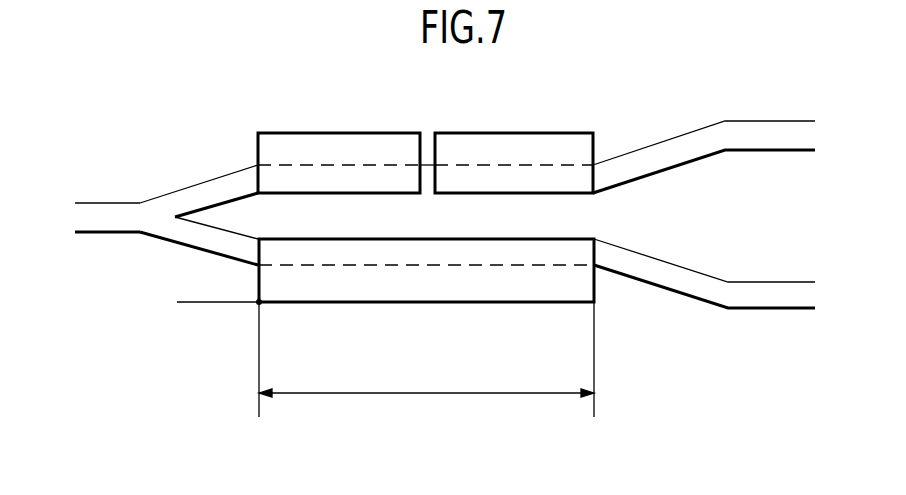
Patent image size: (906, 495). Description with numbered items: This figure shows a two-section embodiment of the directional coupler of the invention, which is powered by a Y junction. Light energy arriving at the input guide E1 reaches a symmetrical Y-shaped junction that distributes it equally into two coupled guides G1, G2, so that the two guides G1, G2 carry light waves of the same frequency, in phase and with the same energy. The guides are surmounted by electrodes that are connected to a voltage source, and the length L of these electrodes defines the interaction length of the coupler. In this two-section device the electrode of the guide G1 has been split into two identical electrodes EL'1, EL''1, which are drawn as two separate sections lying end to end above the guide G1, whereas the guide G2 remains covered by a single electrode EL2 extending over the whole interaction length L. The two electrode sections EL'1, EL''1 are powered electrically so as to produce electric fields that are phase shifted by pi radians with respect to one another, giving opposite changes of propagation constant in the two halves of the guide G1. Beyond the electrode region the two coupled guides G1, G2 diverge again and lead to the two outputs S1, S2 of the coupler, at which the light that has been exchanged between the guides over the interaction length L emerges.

The input guide E1 is at (98, 218).
The first coupled guide G1 is at (215, 188).
The second coupled guide G2 is at (200, 237).
The first electrode section of guide G1 EL'1 is at (346, 140).
The second electrode section of guide G1 EL''1 is at (514, 140).
The electrode of guide G2 EL2 is at (431, 291).
The first output S1 is at (789, 130).
The second output S2 is at (778, 299).
The interaction length L is at (426, 359).